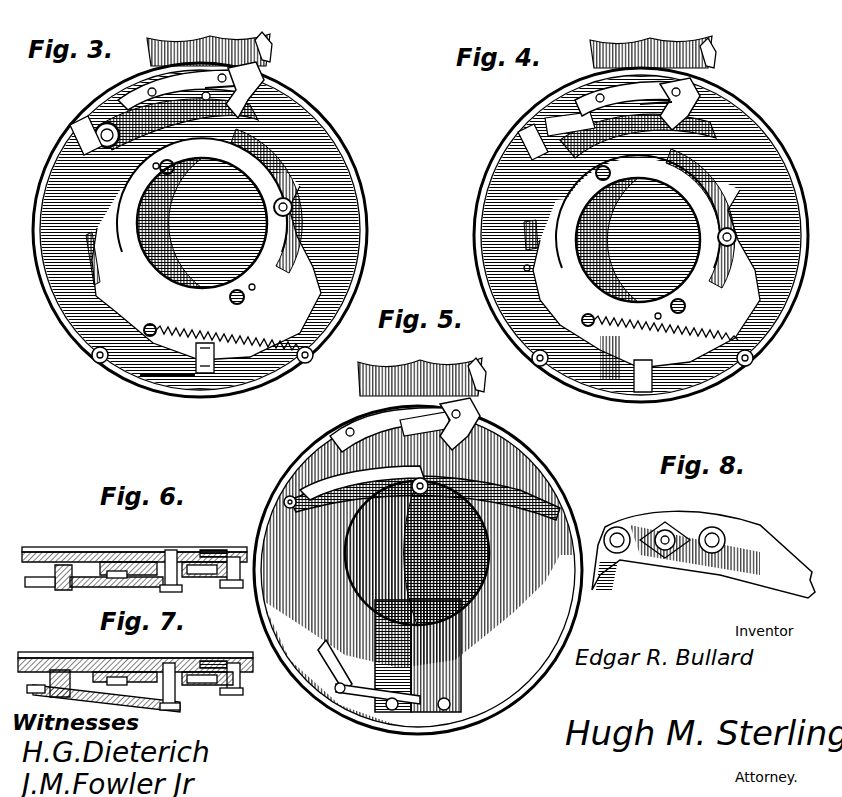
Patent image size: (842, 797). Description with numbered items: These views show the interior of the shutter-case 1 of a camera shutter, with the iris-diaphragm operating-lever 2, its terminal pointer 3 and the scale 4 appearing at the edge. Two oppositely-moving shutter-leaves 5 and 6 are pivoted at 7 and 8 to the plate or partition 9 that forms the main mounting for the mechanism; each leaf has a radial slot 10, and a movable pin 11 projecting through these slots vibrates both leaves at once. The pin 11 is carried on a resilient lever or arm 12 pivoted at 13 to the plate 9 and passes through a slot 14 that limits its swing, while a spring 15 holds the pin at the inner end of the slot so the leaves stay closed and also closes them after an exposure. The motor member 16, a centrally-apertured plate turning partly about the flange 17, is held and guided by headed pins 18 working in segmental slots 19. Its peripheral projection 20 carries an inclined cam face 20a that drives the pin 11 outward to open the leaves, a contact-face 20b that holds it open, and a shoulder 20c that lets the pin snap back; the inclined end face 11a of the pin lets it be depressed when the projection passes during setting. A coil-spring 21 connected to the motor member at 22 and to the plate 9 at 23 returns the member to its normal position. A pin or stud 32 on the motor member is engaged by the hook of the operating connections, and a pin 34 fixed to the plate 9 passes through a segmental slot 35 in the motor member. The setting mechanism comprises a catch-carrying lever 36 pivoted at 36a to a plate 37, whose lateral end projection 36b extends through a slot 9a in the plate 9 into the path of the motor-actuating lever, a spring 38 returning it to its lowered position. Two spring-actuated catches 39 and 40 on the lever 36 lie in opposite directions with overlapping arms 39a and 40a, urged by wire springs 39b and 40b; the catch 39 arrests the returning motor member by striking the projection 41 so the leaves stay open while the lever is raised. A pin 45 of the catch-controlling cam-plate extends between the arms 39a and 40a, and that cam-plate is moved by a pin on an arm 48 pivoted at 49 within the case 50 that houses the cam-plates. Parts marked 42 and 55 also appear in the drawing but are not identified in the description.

In FIG. 3, the shutter-case 1 is at (292, 122).
In FIG. 4, the shutter-case 1 is at (736, 120).
In FIG. 5, the shutter-case 1 is at (512, 466).
In FIG. 3, the operating-lever 2 is at (206, 266).
In FIG. 4, the operating-lever 2 is at (646, 275).
In FIG. 5, the operating-lever 2 is at (421, 571).
In FIG. 3, the terminal pointer 3 is at (308, 362).
In FIG. 4, the terminal pointer 3 is at (752, 366).
In FIG. 3, the scale 4 is at (222, 36).
In FIG. 5, the scale 4 is at (336, 686).
In FIG. 3, the shutter-leaf 5 is at (150, 212).
In FIG. 4, the shutter-leaf 5 is at (592, 212).
In FIG. 5, the shutter-leaf 5 is at (345, 552).
In FIG. 6, the shutter-leaf 5 is at (104, 562).
In FIG. 7, the shutter-leaf 5 is at (126, 672).
In FIG. 3, the shutter-leaf 6 is at (258, 236).
In FIG. 4, the shutter-leaf 6 is at (690, 272).
In FIG. 5, the shutter-leaf 6 is at (488, 562).
In FIG. 5, the pivot 7 is at (392, 716).
In FIG. 6, the pivot 7 is at (118, 570).
In FIG. 7, the pivot 7 is at (114, 676).
In FIG. 5, the pivot 8 is at (452, 702).
In FIG. 6, the pivot 8 is at (234, 590).
In FIG. 7, the pivot 8 is at (231, 668).
In FIG. 3, the plate or partition 9 is at (340, 188).
In FIG. 4, the plate or partition 9 is at (770, 162).
In FIG. 6, the plate or partition 9 is at (54, 552).
In FIG. 7, the plate or partition 9 is at (52, 658).
In FIG. 3, the slot 9a is at (82, 124).
In FIG. 4, the slot 9a is at (522, 136).
In FIG. 5, the radial slot 10 is at (416, 716).
In FIG. 6, the radial slot 10 is at (166, 592).
In FIG. 7, the radial slot 10 is at (176, 706).
In FIG. 3, the movable pin 11 is at (196, 380).
In FIG. 4, the movable pin 11 is at (636, 394).
In FIG. 6, the movable pin 11 is at (168, 550).
In FIG. 7, the movable pin 11 is at (162, 698).
In FIG. 6, the inclined end face 11a is at (206, 549).
In FIG. 7, the inclined end face 11a is at (208, 654).
In FIG. 5, the lever or arm 12 is at (386, 708).
In FIG. 6, the lever or arm 12 is at (104, 588).
In FIG. 7, the lever or arm 12 is at (100, 698).
In FIG. 5, the pivot 13 is at (336, 692).
In FIG. 6, the pivot 13 is at (60, 592).
In FIG. 7, the pivot 13 is at (60, 698).
In FIG. 3, the slot 14 is at (212, 380).
In FIG. 4, the slot 14 is at (648, 396).
In FIG. 6, the slot 14 is at (214, 562).
In FIG. 7, the slot 14 is at (222, 690).
In FIG. 5, the spring 15 is at (330, 658).
In FIG. 6, the spring 15 is at (40, 588).
In FIG. 7, the spring 15 is at (40, 684).
In FIG. 3, the motor member 16 is at (256, 292).
In FIG. 3, the flange 17 is at (254, 266).
In FIG. 4, the flange 17 is at (590, 272).
In FIG. 3, the headed pins 18 is at (224, 316).
In FIG. 4, the headed pins 18 is at (686, 306).
In FIG. 3, the segmental slots or recesses 19 is at (258, 310).
In FIG. 4, the segmental slots or recesses 19 is at (641, 316).
In FIG. 3, the peripheral projection 20 is at (214, 358).
In FIG. 4, the peripheral projection 20 is at (626, 364).
In FIG. 6, the peripheral projection 20 is at (236, 547).
In FIG. 7, the peripheral projection 20 is at (188, 660).
In FIG. 3, the inclined or cam face 20a is at (262, 376).
In FIG. 4, the inclined or cam face 20a is at (700, 380).
In FIG. 3, the contact-face 20b is at (236, 396).
In FIG. 4, the contact-face 20b is at (626, 400).
In FIG. 3, the shoulder or face 20c is at (200, 380).
In FIG. 4, the shoulder or face 20c is at (604, 386).
In FIG. 3, the coil-spring 21 is at (228, 336).
In FIG. 4, the coil-spring 21 is at (666, 329).
In FIG. 3, the spring connection 22 is at (155, 322).
In FIG. 4, the spring connection 22 is at (589, 311).
In FIG. 3, the spring connection 23 is at (314, 354).
In FIG. 4, the spring connection 23 is at (740, 380).
In FIG. 3, the pin or stud 32 is at (96, 306).
In FIG. 4, the pin or stud 32 is at (522, 270).
In FIG. 5, the pin or stud 32 is at (542, 696).
In FIG. 3, the pin 34 is at (102, 253).
In FIG. 4, the pin 34 is at (552, 242).
In FIG. 3, the segmental slot 35 is at (92, 266).
In FIG. 4, the segmental slot 35 is at (522, 232).
In FIG. 5, the catch-carrying lever 36 is at (362, 472).
In FIG. 8, the catch-carrying lever 36 is at (748, 555).
In FIG. 3, the pivot 36a is at (92, 128).
In FIG. 4, the pivot 36a is at (546, 122).
In FIG. 5, the pivot 36a is at (424, 418).
In FIG. 8, the pivot 36a is at (662, 556).
In FIG. 4, the lateral end projection 36b is at (638, 136).
In FIG. 5, the plate 37 is at (425, 481).
In FIG. 5, the spring 38 is at (294, 494).
In FIG. 3, the catch 39 is at (233, 83).
In FIG. 4, the catch 39 is at (706, 92).
In FIG. 5, the catch 39 is at (478, 420).
In FIG. 8, the catch 39 is at (604, 586).
In FIG. 3, the arm 39a is at (212, 80).
In FIG. 4, the arm 39a is at (656, 98).
In FIG. 5, the arm 39a is at (435, 467).
In FIG. 8, the catch-actuating spring 39b is at (628, 556).
In FIG. 3, the catch 40 is at (145, 94).
In FIG. 4, the catch 40 is at (588, 98).
In FIG. 5, the catch 40 is at (364, 428).
In FIG. 8, the catch 40 is at (776, 574).
In FIG. 3, the arm 40a is at (208, 50).
In FIG. 4, the arm 40a is at (632, 90).
In FIG. 5, the arm 40a is at (400, 410).
In FIG. 8, the catch-actuating spring 40b is at (718, 560).
In FIG. 4, the projection 41 is at (745, 151).
In FIG. 4, the cam 42 is at (554, 137).
In FIG. 3, the pin 45 is at (264, 52).
In FIG. 4, the pin 45 is at (708, 56).
In FIG. 5, the pin 45 is at (450, 400).
In FIG. 4, the arm 48 is at (591, 171).
In FIG. 4, the pivot 49 is at (617, 151).
In FIG. 4, the case 50 is at (598, 90).
In FIG. 4, the pin 55 is at (699, 171).